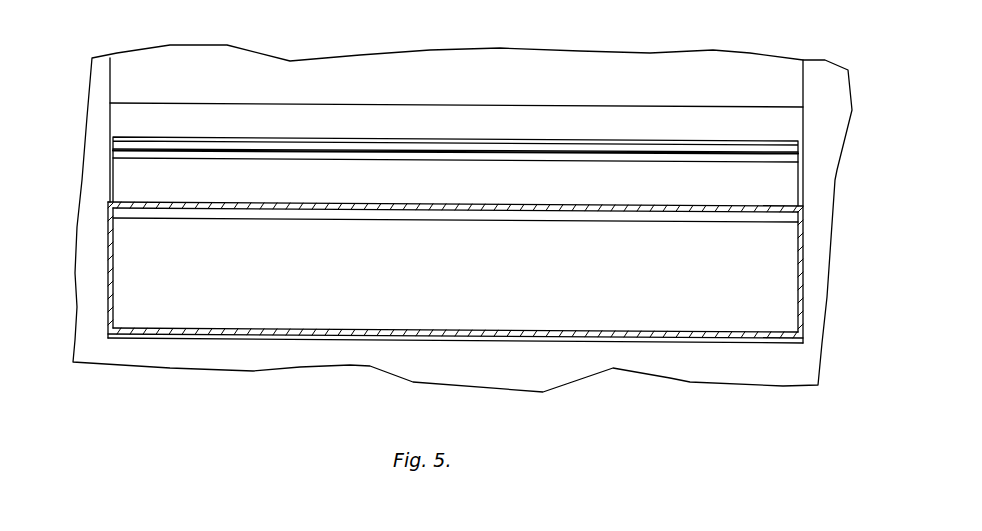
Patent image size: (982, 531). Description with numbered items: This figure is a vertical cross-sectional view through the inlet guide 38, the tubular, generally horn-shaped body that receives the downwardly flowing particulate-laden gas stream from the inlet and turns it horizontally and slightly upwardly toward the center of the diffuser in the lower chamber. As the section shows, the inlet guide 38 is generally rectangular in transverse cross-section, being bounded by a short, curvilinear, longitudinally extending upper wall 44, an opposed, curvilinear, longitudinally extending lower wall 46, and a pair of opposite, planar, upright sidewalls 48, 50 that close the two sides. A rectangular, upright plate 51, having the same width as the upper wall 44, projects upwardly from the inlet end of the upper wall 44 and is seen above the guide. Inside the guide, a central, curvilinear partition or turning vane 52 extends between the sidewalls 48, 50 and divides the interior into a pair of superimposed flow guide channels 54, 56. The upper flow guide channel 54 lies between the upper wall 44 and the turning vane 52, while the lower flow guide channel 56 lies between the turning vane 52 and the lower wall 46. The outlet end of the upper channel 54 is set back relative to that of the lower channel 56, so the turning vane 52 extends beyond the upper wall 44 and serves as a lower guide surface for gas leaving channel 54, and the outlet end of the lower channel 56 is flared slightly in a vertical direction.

The inlet guide 38 is at (810, 102).
The upper wall 44 is at (383, 138).
The lower wall 46 is at (403, 333).
The sidewall 48 is at (108, 282).
The sidewall 50 is at (803, 230).
The upright plate 51 is at (567, 68).
The turning vane 52 is at (473, 205).
The flow guide channel 54 is at (132, 180).
The flow guide channel 56 is at (207, 315).